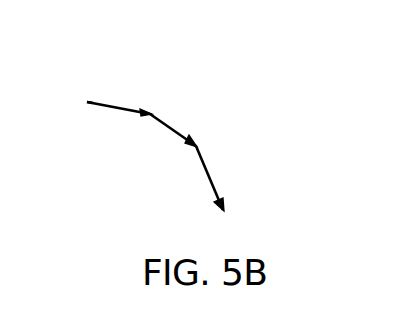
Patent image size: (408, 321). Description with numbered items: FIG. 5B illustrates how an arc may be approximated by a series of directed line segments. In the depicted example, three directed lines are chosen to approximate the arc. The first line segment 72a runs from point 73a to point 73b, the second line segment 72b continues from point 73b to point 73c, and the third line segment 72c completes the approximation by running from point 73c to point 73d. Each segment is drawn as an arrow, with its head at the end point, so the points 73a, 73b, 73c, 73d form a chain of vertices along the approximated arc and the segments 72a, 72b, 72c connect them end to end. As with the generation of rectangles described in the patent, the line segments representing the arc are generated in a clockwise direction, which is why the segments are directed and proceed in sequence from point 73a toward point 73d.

The line segment 72a is at (107, 105).
The line segment 72b is at (172, 129).
The line segment 72c is at (209, 178).
The point 73a is at (87, 102).
The point 73b is at (147, 110).
The point 73c is at (197, 145).
The point 73d is at (225, 203).